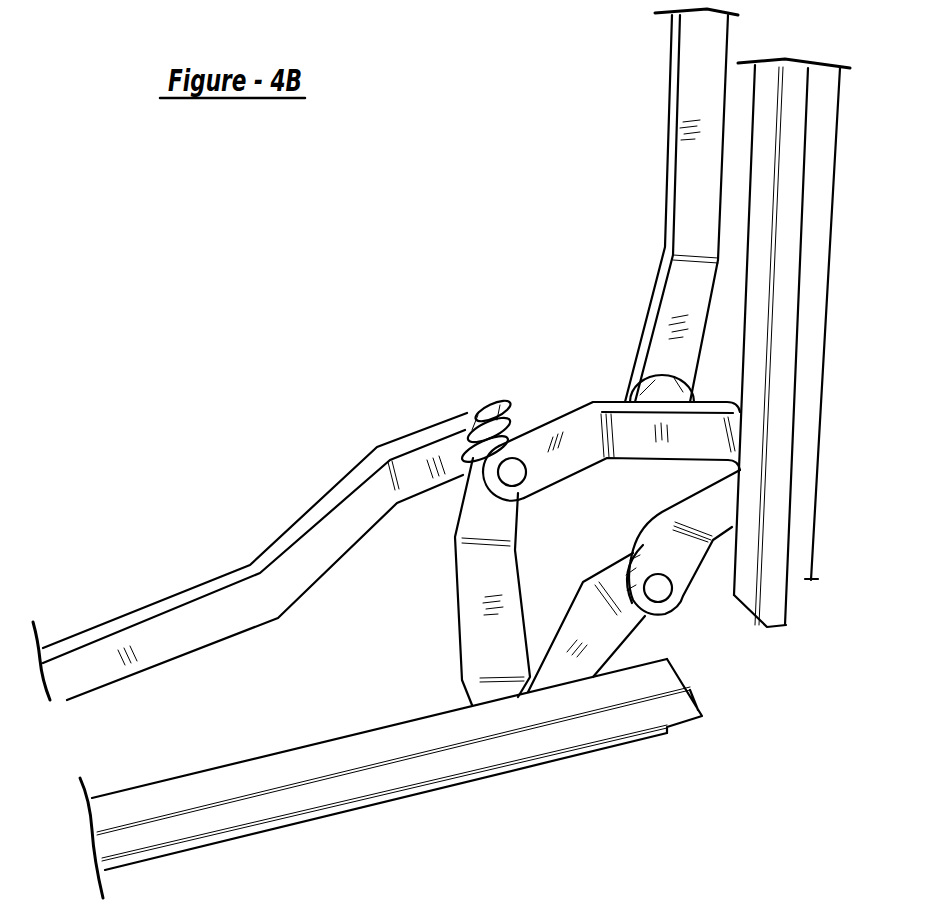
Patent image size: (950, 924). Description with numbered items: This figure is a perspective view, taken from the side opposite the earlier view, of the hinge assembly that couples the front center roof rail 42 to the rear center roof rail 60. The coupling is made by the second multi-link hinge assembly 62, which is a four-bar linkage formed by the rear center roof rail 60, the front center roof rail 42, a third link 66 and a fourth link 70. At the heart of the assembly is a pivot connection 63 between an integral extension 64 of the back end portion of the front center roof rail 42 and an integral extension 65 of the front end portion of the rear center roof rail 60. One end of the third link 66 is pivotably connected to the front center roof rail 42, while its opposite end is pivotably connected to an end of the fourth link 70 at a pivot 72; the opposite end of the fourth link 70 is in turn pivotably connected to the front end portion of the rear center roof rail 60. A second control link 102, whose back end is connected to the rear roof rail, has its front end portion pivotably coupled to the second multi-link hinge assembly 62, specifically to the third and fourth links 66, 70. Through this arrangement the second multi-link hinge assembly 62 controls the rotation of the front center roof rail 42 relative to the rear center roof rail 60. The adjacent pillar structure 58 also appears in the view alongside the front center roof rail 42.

The front center roof rail 42 is at (793, 108).
The pillar 58 is at (685, 183).
The second multi-link hinge assembly 62 is at (499, 261).
The third link 66 is at (573, 433).
The pivot 72 is at (512, 472).
The second control link 102 is at (193, 633).
The fourth link 70 is at (480, 578).
The pivot connection 63 is at (653, 587).
The integral extension 64 is at (687, 563).
The integral extension 65 is at (592, 628).
The rear center roof rail 60 is at (417, 772).